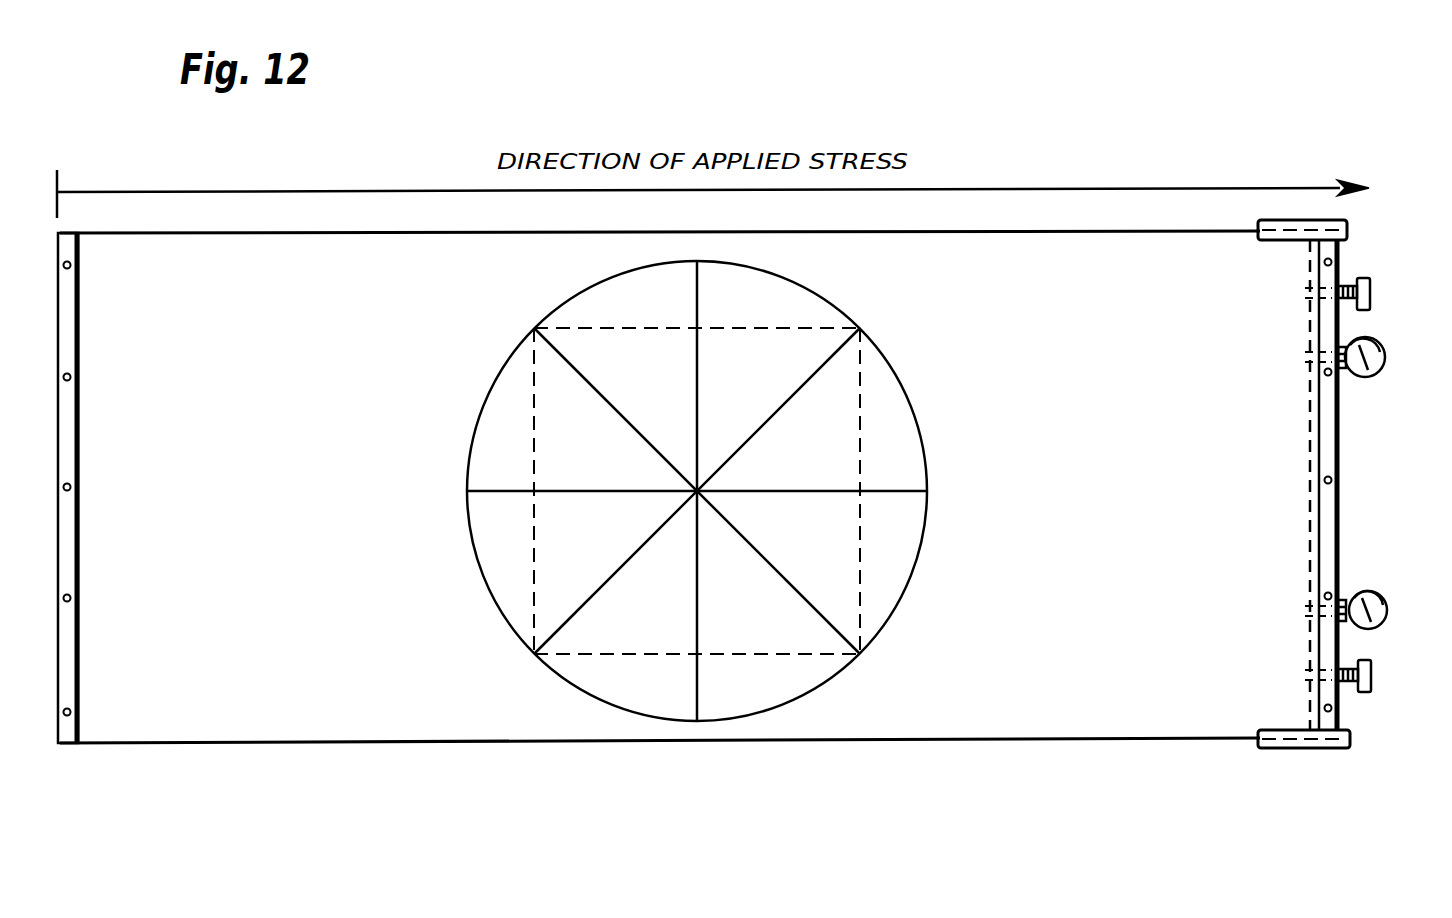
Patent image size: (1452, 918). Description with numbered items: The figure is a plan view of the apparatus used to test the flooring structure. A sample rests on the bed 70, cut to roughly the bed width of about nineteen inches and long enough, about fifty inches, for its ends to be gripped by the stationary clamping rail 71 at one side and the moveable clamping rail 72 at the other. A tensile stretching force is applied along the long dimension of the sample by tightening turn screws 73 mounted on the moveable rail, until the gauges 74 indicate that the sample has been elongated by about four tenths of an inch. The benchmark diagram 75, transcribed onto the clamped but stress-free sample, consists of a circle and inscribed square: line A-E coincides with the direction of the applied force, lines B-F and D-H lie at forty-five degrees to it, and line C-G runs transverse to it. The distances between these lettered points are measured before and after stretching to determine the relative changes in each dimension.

The bed 70 is at (312, 724).
The stationary clamping rail 71 is at (70, 548).
The moveable clamping rail 72 is at (1330, 503).
The adjusting screw 73 is at (1372, 289).
The gauges 74 is at (1386, 353).
The benchmark diagram 75 is at (963, 604).